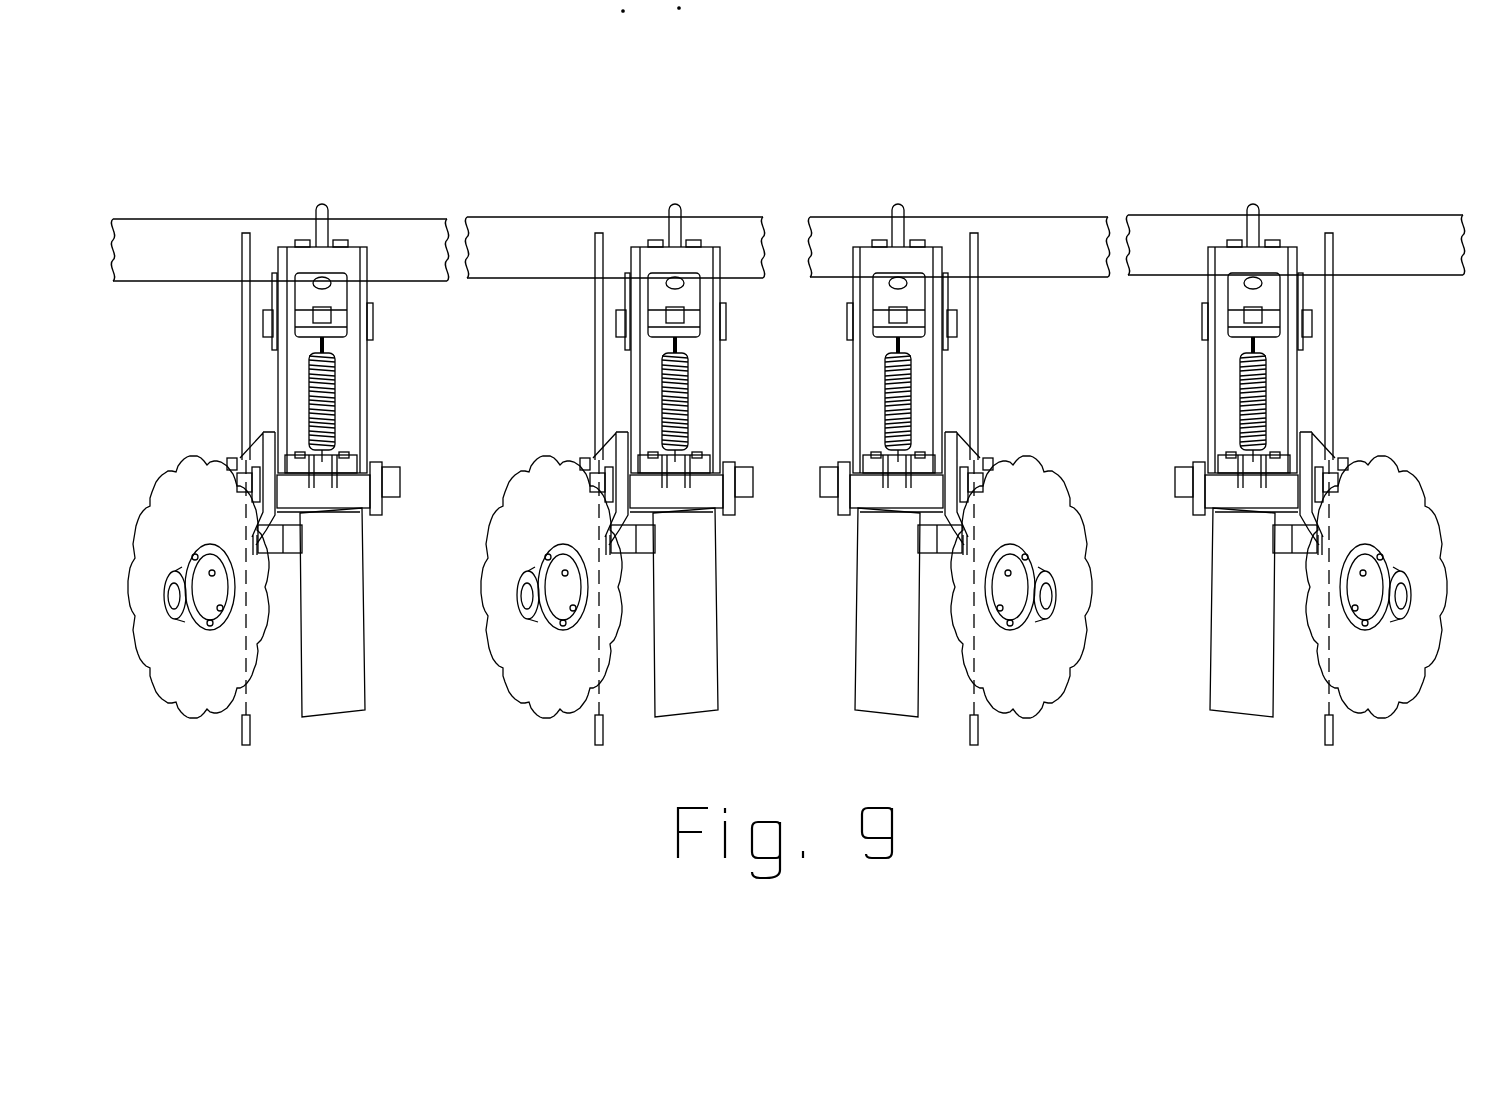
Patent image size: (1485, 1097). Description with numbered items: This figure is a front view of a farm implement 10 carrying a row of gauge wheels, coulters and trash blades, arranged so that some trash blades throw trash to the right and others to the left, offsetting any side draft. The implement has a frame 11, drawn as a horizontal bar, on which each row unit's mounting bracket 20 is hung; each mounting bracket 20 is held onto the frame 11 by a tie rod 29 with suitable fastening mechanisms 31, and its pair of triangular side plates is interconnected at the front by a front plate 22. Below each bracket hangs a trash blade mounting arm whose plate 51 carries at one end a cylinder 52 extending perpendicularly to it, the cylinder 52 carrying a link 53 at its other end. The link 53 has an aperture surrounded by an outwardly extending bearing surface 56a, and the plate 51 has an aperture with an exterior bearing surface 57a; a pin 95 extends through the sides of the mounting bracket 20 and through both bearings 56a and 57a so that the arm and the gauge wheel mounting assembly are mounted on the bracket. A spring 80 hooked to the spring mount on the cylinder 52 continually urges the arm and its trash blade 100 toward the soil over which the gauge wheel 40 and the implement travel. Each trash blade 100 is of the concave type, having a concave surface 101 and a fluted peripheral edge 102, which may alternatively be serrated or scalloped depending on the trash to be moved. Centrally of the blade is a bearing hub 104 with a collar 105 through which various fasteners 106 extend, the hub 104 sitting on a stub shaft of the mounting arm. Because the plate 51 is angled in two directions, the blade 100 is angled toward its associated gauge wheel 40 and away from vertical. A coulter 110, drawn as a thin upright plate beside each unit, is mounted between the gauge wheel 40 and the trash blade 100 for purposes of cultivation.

The farm implement 10 is at (246, 164).
The frame 11 is at (393, 230).
The mounting bracket 20 is at (372, 435).
The front plate 22 is at (350, 377).
The tie rod 29 is at (320, 202).
The fastening mechanisms 31 is at (341, 282).
The gauge wheel 40 is at (330, 707).
The plate 51 is at (212, 463).
The cylinder 52 is at (352, 498).
The link 53 is at (730, 512).
The bearing surface 56a is at (740, 467).
The exterior bearing surface 57a is at (1318, 455).
The spring 80 is at (690, 412).
The pin 95 is at (985, 474).
The trash blade 100 is at (152, 457).
The concave surface 101 is at (238, 679).
The peripheral edge 102 is at (200, 703).
The bearing hub 104 is at (178, 573).
The collar 105 is at (573, 540).
The fasteners 106 is at (1372, 610).
The coulter 110 is at (242, 353).